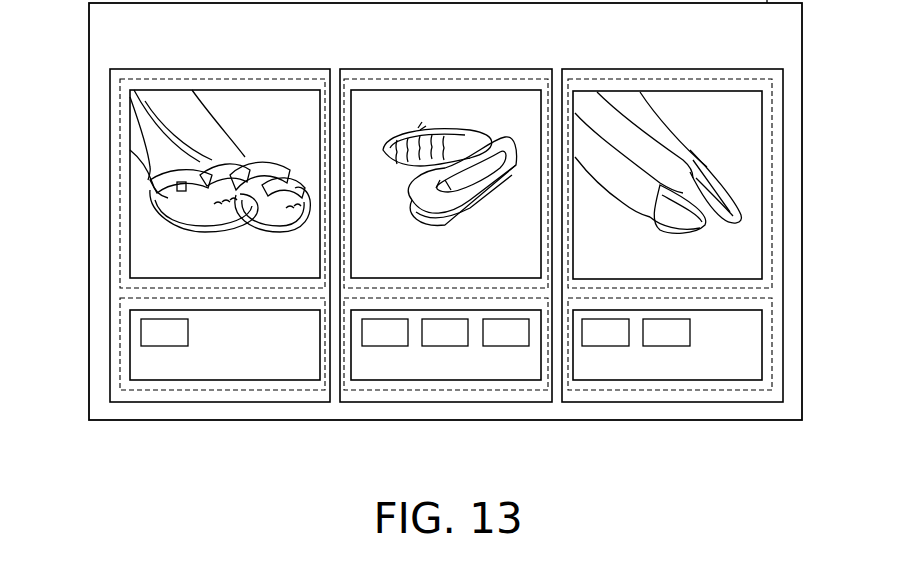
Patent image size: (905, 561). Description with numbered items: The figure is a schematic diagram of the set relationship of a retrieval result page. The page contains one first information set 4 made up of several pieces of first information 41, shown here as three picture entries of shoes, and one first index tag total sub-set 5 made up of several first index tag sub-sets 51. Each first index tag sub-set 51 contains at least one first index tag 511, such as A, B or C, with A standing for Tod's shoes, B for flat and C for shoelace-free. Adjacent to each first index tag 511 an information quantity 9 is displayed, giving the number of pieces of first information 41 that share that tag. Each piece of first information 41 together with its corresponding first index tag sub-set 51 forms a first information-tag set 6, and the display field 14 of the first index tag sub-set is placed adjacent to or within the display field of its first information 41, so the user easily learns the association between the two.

The first information set 4 is at (121, 172).
The first information 41 is at (130, 110).
The first index tag total sub-set 5 is at (390, 391).
The first index tag sub-set 51 is at (206, 346).
The first index tag 511 is at (361, 335).
The first information-tag set 6 is at (110, 70).
The information quantity 9 is at (442, 379).
The display field of the first index tag sub-set 14 is at (260, 382).